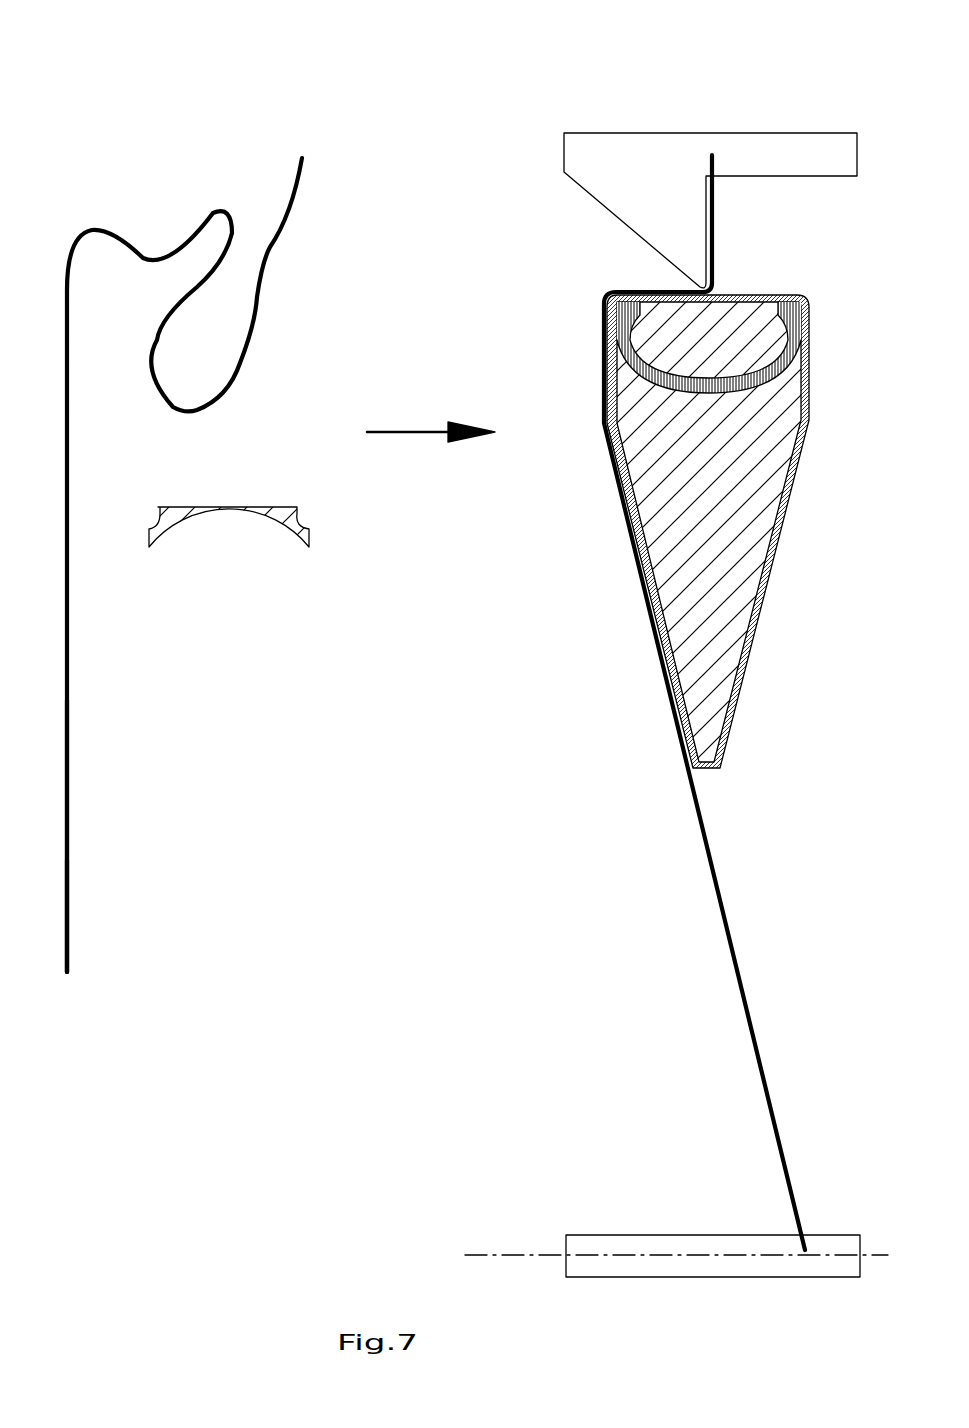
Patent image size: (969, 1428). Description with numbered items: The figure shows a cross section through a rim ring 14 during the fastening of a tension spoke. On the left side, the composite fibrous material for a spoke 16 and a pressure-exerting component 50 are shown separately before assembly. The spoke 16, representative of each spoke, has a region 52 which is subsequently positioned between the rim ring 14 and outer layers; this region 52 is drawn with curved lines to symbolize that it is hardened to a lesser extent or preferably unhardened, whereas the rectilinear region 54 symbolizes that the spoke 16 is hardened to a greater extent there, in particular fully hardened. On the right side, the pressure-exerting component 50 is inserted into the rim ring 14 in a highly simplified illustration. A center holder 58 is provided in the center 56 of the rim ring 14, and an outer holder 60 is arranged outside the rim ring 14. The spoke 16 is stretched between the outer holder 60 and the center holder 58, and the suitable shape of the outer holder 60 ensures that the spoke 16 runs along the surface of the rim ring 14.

The rim ring 14 is at (782, 648).
The spoke 16 is at (88, 927).
The pressure-exerting component 50 is at (238, 570).
The region 52 is at (168, 143).
The rectilinear region 54 is at (107, 707).
The center 56 is at (483, 1253).
The center holder 58 is at (607, 1235).
The outer holder 60 is at (805, 176).